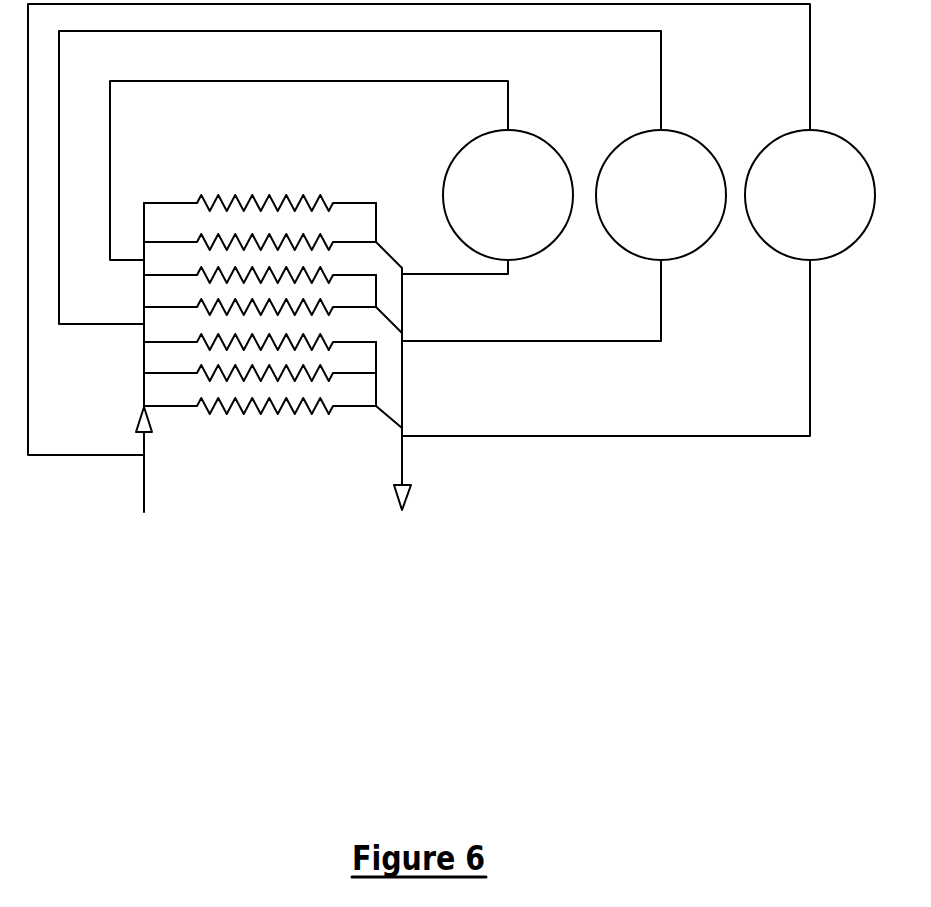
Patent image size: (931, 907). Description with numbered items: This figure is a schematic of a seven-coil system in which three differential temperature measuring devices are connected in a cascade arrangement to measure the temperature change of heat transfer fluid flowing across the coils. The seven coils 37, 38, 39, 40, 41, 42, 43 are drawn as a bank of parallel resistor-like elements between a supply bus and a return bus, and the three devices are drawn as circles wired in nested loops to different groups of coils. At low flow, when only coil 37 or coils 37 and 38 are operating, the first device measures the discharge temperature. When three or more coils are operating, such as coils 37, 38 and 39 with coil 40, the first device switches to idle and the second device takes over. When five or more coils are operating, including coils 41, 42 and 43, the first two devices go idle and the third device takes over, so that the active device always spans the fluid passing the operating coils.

The coil 37 is at (260, 194).
The coil 38 is at (260, 230).
The coil 39 is at (260, 263).
The coil 40 is at (260, 295).
The coil 41 is at (260, 329).
The coil 42 is at (260, 361).
The coil 43 is at (260, 394).